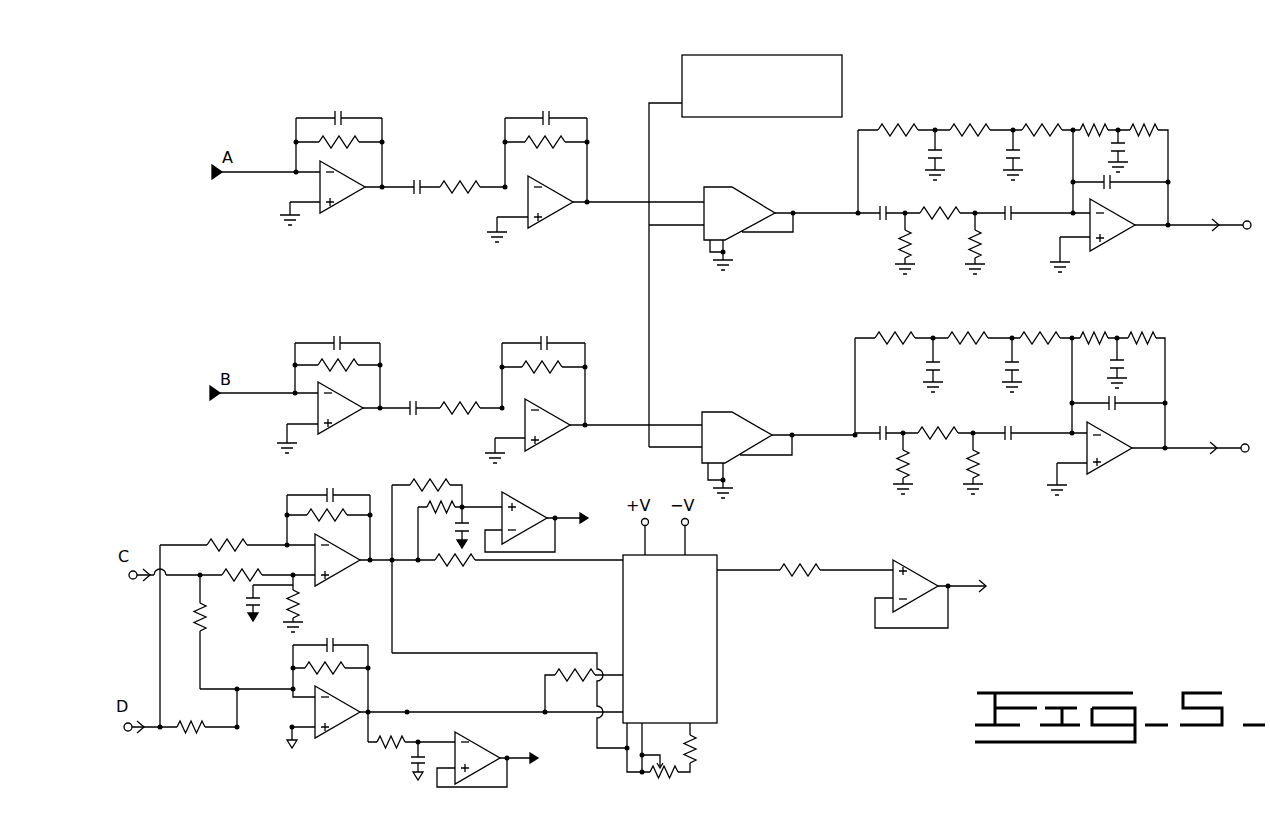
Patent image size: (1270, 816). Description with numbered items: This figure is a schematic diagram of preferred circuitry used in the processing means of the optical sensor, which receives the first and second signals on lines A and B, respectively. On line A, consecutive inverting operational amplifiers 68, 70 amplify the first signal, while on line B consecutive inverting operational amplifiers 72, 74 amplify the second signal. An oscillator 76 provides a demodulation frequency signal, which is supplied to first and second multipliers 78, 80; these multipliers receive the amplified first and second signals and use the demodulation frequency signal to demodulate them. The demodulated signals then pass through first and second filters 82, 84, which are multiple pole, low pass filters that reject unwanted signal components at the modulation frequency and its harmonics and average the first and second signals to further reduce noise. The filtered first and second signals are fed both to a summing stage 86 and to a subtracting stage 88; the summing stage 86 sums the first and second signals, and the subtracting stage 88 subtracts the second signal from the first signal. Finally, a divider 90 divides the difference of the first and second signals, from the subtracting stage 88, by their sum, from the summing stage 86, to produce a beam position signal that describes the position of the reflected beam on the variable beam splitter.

The inverting operational amplifier 68 is at (402, 144).
The inverting operational amplifier 70 is at (494, 144).
The inverting operational amplifier 72 is at (398, 361).
The inverting operational amplifier 74 is at (488, 366).
The oscillator 76 is at (746, 107).
The first multiplier 78 is at (728, 196).
The second multiplier 80 is at (723, 416).
The first filter 82 is at (986, 108).
The second filter 84 is at (975, 327).
The summing stage 86 is at (339, 772).
The subtracting stage 88 is at (264, 504).
The divider 90 is at (659, 640).